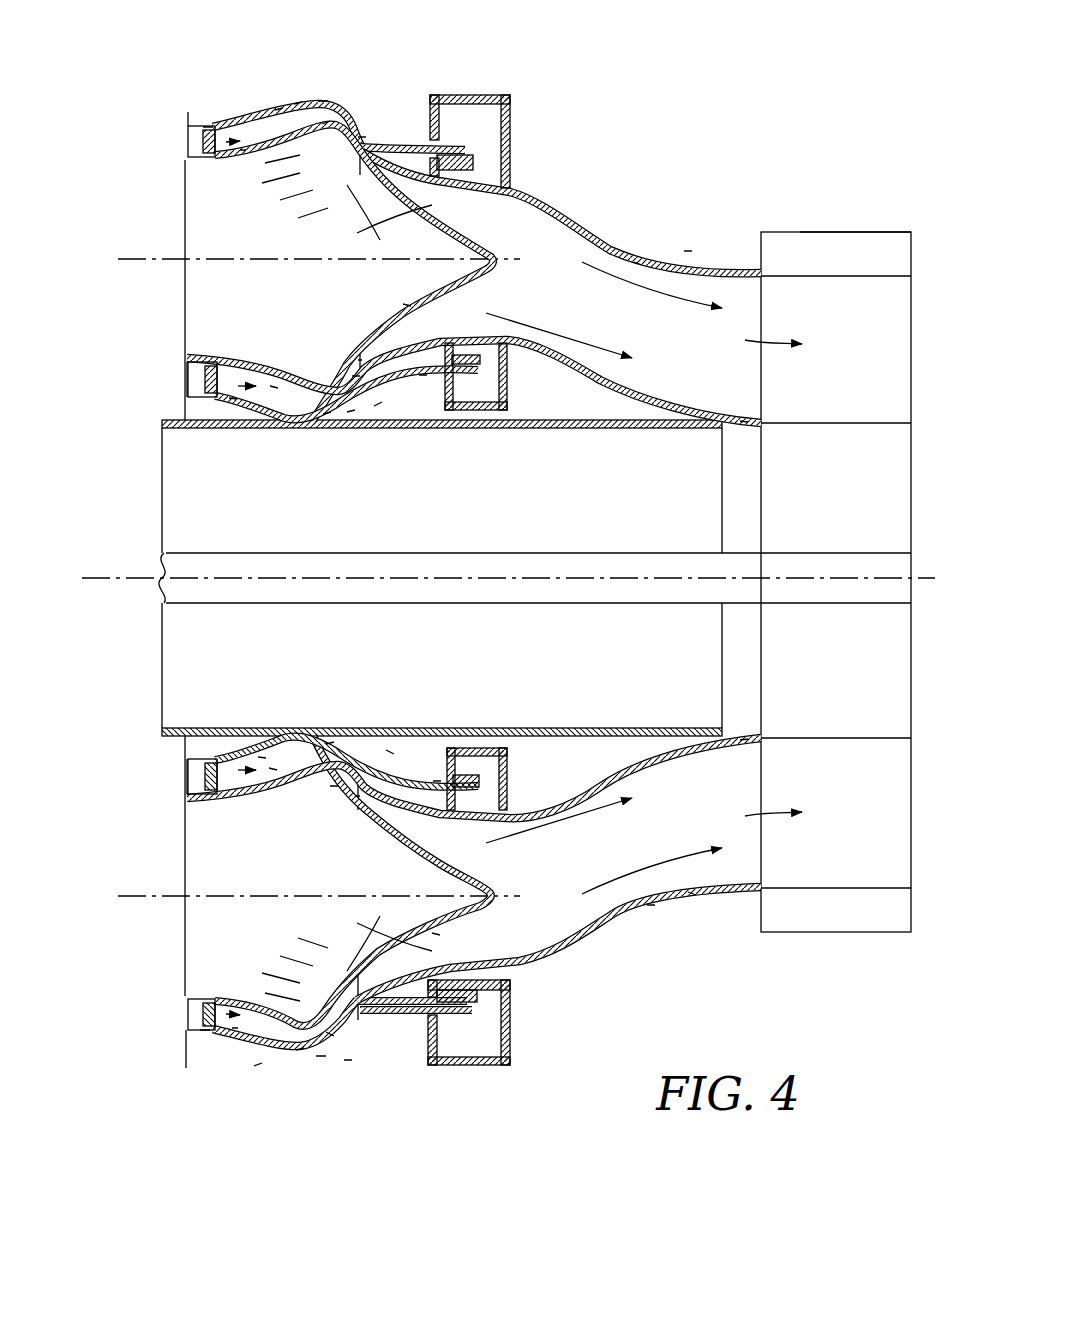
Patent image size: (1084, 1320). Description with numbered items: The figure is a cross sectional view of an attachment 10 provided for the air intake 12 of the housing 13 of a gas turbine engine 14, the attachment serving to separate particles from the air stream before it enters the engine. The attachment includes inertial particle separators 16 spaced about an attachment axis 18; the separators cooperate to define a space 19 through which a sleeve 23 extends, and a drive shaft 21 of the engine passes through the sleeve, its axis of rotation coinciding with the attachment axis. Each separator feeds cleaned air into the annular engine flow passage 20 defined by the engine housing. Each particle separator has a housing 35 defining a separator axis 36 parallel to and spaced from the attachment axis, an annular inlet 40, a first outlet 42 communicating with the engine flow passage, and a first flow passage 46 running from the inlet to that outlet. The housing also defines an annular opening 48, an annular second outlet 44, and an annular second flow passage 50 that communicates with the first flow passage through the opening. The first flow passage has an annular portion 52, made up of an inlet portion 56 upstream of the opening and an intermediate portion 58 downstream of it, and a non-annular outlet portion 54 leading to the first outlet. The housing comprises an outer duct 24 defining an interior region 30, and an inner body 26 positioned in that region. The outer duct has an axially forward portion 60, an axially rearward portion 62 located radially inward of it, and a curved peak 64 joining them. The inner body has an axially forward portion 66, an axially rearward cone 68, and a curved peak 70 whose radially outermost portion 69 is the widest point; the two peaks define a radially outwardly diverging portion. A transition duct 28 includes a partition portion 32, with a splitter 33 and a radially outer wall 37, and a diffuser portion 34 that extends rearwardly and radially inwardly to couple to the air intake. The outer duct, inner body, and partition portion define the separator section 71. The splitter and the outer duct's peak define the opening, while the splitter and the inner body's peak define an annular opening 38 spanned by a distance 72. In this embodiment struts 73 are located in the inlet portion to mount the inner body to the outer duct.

The attachment 10 is at (125, 80).
The air intake 12 is at (768, 232).
The housing 13 is at (826, 230).
The gas turbine engine 14 is at (868, 232).
The inertial particle separator 16 is at (298, 98).
The attachment axis 18 is at (428, 576).
The space 19 is at (312, 527).
The engine flow passage 20 is at (847, 385).
The drive shaft 21 is at (540, 566).
The sleeve 23 is at (351, 412).
The outer duct 24 is at (224, 118).
The inner body 26 is at (224, 350).
The transition duct 28 is at (590, 222).
The interior region 30 is at (293, 403).
The partition portion 32 is at (407, 163).
The splitter 33 is at (362, 137).
The diffuser portion 34 is at (688, 251).
The housing 35 is at (188, 112).
The separator axis 36 is at (134, 262).
The radially outer wall 37 is at (378, 406).
The annular opening 38 is at (356, 376).
The inlet 40 is at (188, 140).
The first outlet 42 is at (761, 385).
The second outlet 44 is at (472, 155).
The first flow passage 46 is at (243, 152).
The annular opening 48 is at (364, 134).
The second flow passage 50 is at (423, 377).
The annular portion 52 is at (274, 386).
The outlet portion 54 is at (638, 262).
The inlet portion 56 is at (233, 398).
The intermediate portion 58 is at (430, 206).
The axially forward portion 60 is at (207, 127).
The axially rearward portion 62 is at (424, 140).
The curved peak 64 is at (323, 100).
The axially forward portion 66 is at (202, 360).
The axially rearward cone 68 is at (407, 303).
The radially outermost portion 69 is at (326, 122).
The curved peak 70 is at (327, 414).
The separator section 71 is at (279, 106).
The distance 72 is at (361, 373).
The struts 73 is at (209, 158).